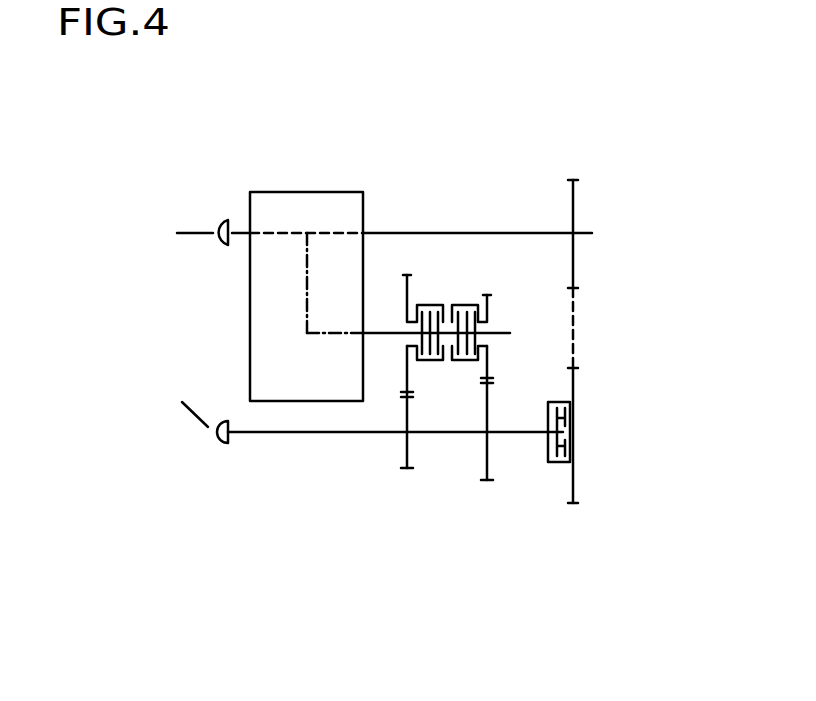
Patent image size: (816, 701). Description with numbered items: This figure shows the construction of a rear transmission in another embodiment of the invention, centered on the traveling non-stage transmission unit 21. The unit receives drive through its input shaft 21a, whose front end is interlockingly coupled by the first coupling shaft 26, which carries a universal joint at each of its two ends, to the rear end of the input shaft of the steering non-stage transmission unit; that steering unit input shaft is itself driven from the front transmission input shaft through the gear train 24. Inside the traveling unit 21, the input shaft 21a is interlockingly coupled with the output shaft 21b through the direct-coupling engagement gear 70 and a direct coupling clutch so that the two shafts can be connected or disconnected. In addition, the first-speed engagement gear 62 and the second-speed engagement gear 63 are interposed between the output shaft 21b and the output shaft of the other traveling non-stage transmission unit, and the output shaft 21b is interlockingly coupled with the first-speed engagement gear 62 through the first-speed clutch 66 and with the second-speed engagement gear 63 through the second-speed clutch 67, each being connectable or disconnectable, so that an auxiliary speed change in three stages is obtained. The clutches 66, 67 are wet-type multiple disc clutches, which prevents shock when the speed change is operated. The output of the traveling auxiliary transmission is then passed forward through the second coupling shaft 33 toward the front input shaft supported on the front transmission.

The traveling non-stage transmission unit 21 is at (313, 193).
The input shaft of the traveling non-stage transmission unit 21a is at (401, 238).
The output shaft of the traveling non-stage transmission unit 21b is at (376, 333).
The first coupling shaft 26 is at (200, 232).
The second coupling shaft 33 is at (207, 425).
The second-speed engagement gear 63 is at (396, 392).
The first-speed engagement gear 62 is at (497, 380).
The second-speed clutch 67 is at (431, 365).
The first-speed clutch 66 is at (467, 365).
The gear train 24 is at (562, 463).
The direct-coupling engagement gear 70 is at (610, 318).